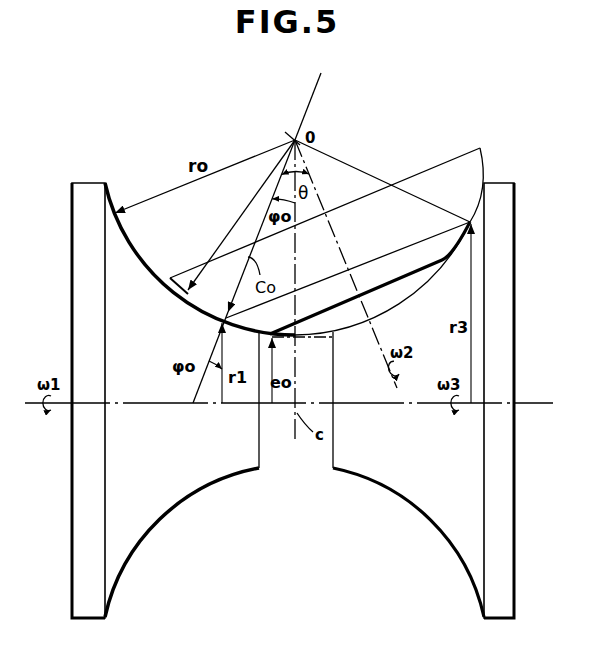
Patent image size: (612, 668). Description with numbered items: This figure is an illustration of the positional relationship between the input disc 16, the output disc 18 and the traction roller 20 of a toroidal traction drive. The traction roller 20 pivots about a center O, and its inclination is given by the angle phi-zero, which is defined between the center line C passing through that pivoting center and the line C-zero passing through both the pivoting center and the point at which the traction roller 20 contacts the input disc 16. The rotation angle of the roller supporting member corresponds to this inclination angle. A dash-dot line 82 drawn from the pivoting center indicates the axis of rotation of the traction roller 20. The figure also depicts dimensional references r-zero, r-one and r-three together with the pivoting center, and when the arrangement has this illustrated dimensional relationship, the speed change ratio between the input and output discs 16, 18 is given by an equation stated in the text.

The input disc 16 is at (120, 557).
The output disc 18 is at (467, 552).
The traction roller 20 is at (448, 175).
The roller rotation axis 82 is at (319, 198).